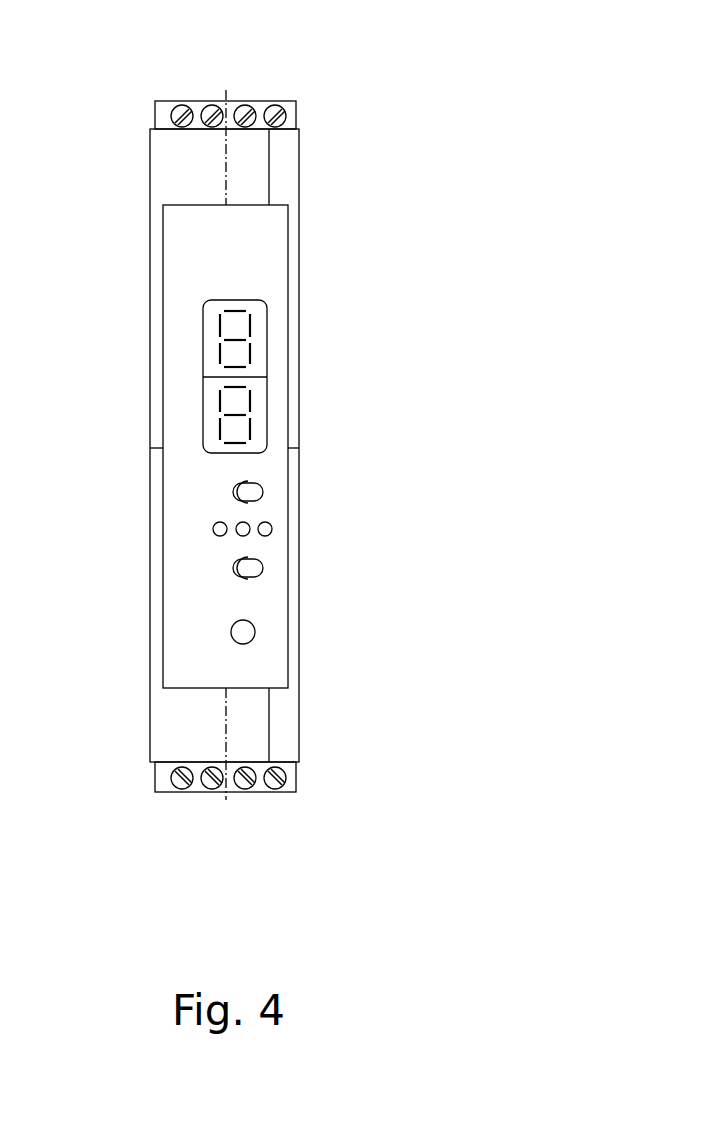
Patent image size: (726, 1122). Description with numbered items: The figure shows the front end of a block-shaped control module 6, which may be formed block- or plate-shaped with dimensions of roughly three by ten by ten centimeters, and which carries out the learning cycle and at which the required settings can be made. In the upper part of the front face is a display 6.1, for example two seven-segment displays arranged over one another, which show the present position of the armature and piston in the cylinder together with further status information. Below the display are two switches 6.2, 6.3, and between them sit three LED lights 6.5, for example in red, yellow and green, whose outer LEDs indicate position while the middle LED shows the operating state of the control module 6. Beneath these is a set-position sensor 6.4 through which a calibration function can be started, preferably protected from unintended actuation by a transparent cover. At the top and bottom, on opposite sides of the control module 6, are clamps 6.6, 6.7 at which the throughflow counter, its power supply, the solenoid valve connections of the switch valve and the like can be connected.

The control module 6 is at (323, 253).
The display 6.1 is at (260, 361).
The switch 6.2 is at (262, 492).
The switch 6.3 is at (262, 568).
The set-position sensor 6.4 is at (256, 632).
The LED lights 6.5 is at (212, 528).
The clamp 6.6 is at (244, 106).
The clamp 6.7 is at (268, 793).